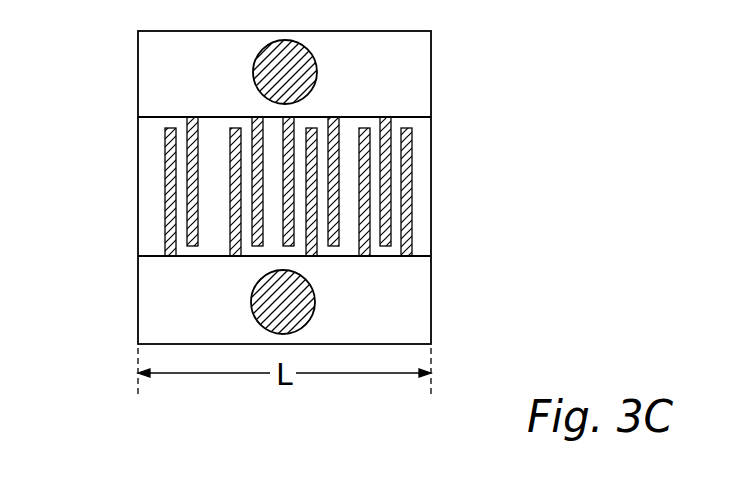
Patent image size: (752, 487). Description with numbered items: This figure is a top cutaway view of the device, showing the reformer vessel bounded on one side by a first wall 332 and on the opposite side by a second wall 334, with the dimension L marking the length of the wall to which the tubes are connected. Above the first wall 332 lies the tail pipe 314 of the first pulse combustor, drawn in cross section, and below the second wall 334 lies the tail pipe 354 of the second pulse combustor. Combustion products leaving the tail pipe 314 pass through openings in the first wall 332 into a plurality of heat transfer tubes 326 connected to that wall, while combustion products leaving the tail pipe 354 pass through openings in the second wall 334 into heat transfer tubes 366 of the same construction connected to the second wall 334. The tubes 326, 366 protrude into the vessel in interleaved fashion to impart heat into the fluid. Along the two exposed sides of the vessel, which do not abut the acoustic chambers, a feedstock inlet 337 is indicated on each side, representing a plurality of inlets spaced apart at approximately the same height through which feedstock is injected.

The tail pipe 314 is at (257, 57).
The first wall 332 is at (368, 117).
The heat transfer tubes 326 is at (294, 171).
The heat transfer tubes 366 is at (414, 152).
The feedstock inlet 337 is at (138, 147).
The second wall 334 is at (392, 257).
The tail pipe 354 is at (252, 293).